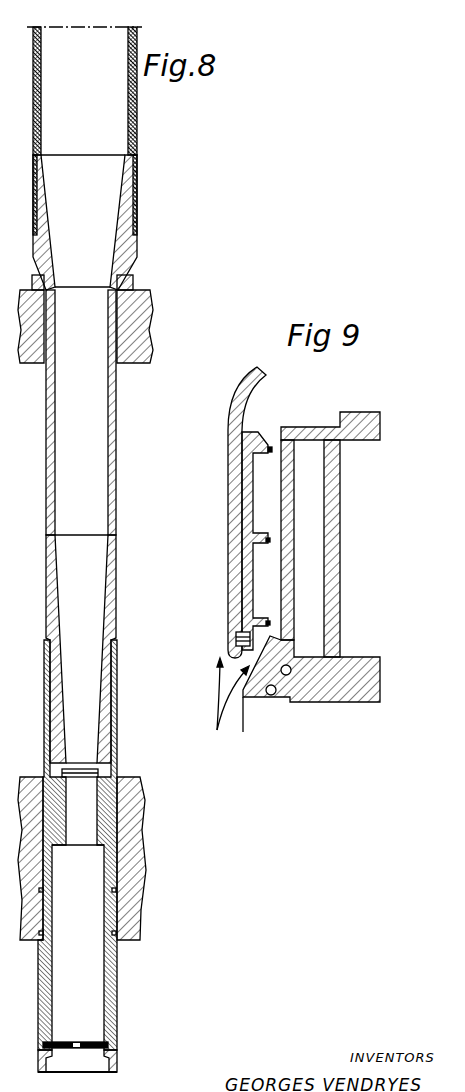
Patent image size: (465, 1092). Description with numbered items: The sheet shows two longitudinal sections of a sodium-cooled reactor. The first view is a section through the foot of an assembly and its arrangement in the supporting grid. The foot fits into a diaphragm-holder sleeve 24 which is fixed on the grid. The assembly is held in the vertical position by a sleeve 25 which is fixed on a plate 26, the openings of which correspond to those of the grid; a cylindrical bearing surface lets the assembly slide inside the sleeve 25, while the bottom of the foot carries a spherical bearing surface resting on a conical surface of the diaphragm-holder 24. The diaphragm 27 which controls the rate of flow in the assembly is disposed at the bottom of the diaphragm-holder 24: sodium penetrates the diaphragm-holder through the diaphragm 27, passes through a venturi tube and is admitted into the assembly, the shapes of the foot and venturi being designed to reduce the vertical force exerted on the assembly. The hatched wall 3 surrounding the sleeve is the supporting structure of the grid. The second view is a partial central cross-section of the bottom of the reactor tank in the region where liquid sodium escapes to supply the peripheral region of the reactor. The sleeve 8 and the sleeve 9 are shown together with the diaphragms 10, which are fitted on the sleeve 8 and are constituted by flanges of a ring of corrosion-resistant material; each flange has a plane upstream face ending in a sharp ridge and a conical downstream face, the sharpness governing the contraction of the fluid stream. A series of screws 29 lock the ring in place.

In FIG. 8, the sleeve 25 is at (138, 292).
In FIG. 8, the plate 26 is at (150, 325).
In FIG. 8, the diaphragm-holder sleeve 24 is at (111, 773).
In FIG. 8, the vessel wall block 3 is at (125, 833).
In FIG. 8, the diaphragm 27 is at (92, 1042).
In FIG. 9, the sleeve 8 is at (228, 462).
In FIG. 9, the diaphragms 10 is at (270, 448).
In FIG. 9, the sleeve 9 is at (288, 578).
In FIG. 9, the screws 29 is at (236, 634).